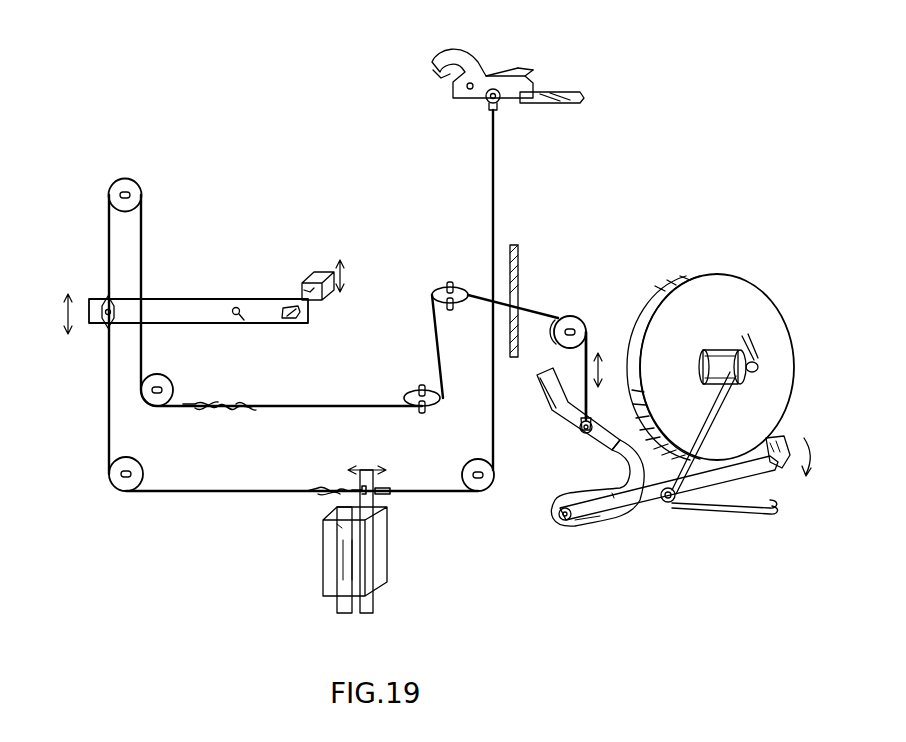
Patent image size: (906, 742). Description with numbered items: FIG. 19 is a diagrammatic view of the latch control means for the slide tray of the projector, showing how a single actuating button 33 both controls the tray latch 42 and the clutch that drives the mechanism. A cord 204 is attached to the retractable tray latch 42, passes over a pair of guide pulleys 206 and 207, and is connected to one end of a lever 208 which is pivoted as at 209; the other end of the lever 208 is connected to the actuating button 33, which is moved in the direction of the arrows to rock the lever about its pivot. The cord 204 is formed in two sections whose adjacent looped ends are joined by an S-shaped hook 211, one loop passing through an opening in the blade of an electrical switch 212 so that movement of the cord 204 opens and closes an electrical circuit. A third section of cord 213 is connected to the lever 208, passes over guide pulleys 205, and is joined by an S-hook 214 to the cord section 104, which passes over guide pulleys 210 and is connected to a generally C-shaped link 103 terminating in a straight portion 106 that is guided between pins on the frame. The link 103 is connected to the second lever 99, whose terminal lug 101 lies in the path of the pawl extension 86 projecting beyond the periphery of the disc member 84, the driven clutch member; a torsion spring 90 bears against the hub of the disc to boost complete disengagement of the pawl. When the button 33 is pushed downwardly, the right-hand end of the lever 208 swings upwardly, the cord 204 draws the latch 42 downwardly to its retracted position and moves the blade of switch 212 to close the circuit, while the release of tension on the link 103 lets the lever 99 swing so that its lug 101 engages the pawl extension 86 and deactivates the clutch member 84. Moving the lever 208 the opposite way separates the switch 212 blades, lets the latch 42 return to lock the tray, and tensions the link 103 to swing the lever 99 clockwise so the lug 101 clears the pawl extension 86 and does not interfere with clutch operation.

The tray latch 42 is at (440, 58).
The cord 204 is at (500, 200).
The third section of cord 213 is at (145, 245).
The guide pulleys 205 is at (132, 182).
The guide pulley 207 is at (144, 472).
The guide pulley 206 is at (466, 462).
The lever 208 is at (178, 302).
The pivot 209 is at (240, 322).
The actuating button 33 is at (320, 272).
The S-hook 214 is at (224, 396).
The guide pulleys 210 is at (440, 288).
The S-shaped hook 211 is at (336, 484).
The electrical switch 212 is at (392, 566).
The disc member 84 is at (755, 296).
The cord 104 is at (590, 358).
The straight portion 106 is at (556, 408).
The C-shaped link 103 is at (612, 448).
The second lever 99 is at (650, 512).
The torsion spring 90 is at (734, 520).
The pawl extension 86 is at (782, 430).
The terminal lug 101 is at (796, 472).